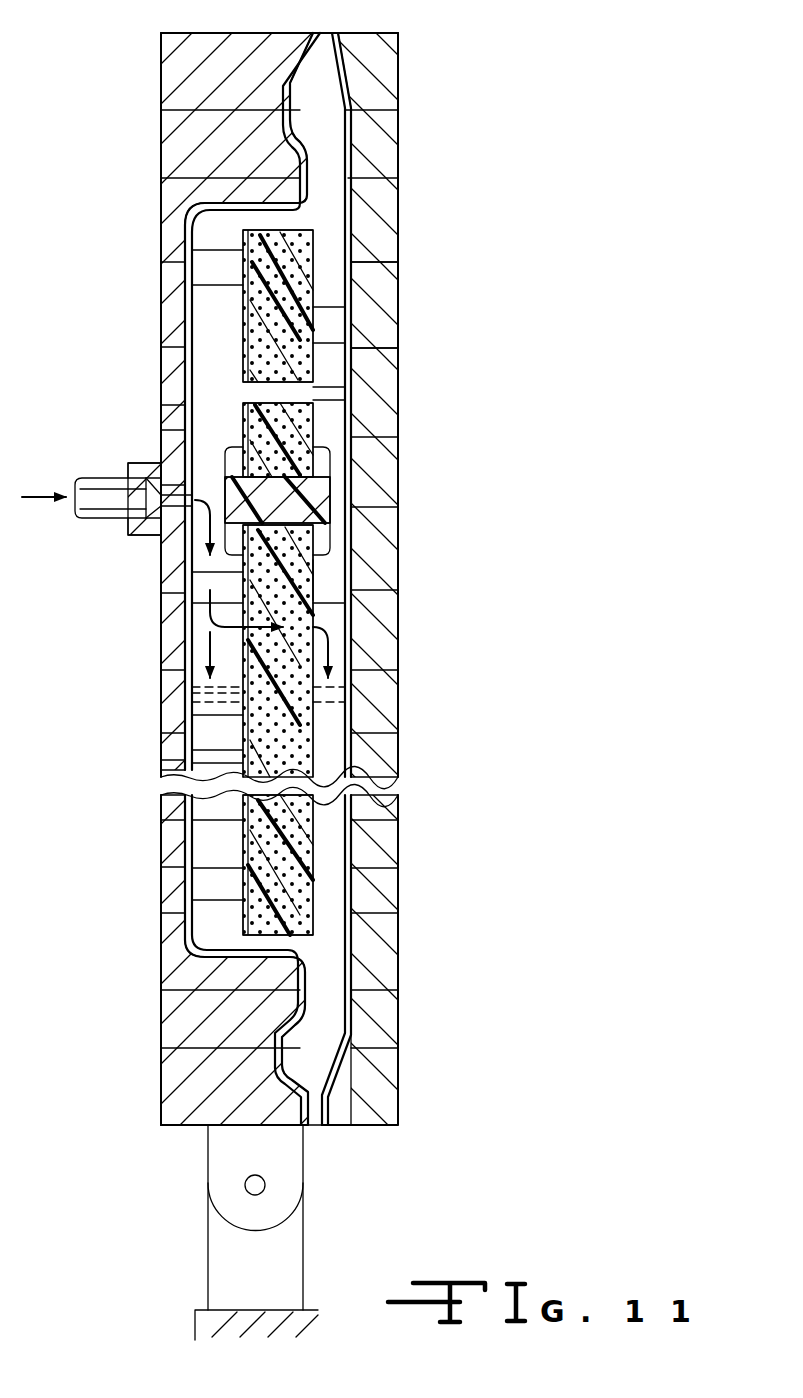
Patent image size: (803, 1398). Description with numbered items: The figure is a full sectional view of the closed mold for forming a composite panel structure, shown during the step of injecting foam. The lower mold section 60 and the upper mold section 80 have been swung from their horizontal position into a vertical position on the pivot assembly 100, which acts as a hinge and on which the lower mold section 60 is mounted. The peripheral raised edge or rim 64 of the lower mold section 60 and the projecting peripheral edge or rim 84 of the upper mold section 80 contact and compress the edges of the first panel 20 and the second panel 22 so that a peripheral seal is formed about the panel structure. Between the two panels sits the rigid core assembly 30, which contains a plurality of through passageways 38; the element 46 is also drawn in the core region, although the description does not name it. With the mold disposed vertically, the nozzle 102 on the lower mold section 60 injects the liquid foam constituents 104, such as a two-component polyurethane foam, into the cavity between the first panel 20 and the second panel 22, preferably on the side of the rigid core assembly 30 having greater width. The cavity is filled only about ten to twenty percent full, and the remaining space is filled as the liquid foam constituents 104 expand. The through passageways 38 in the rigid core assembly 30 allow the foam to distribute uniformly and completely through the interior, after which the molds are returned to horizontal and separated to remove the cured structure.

The first panel 20 is at (161, 407).
The second panel 22 is at (385, 310).
The rigid core assembly 30 is at (322, 576).
The through passageways 38 is at (303, 393).
The spacer cap 46 is at (322, 497).
The lower mold section 60 is at (161, 80).
The peripheral raised edge or rim 64 is at (330, 37).
The upper mold section 80 is at (385, 163).
The projecting peripheral edge or rim 84 is at (313, 1125).
The pivot assembly 100 is at (330, 1168).
The nozzle 102 is at (103, 515).
The liquid foam constituents 104 is at (205, 855).